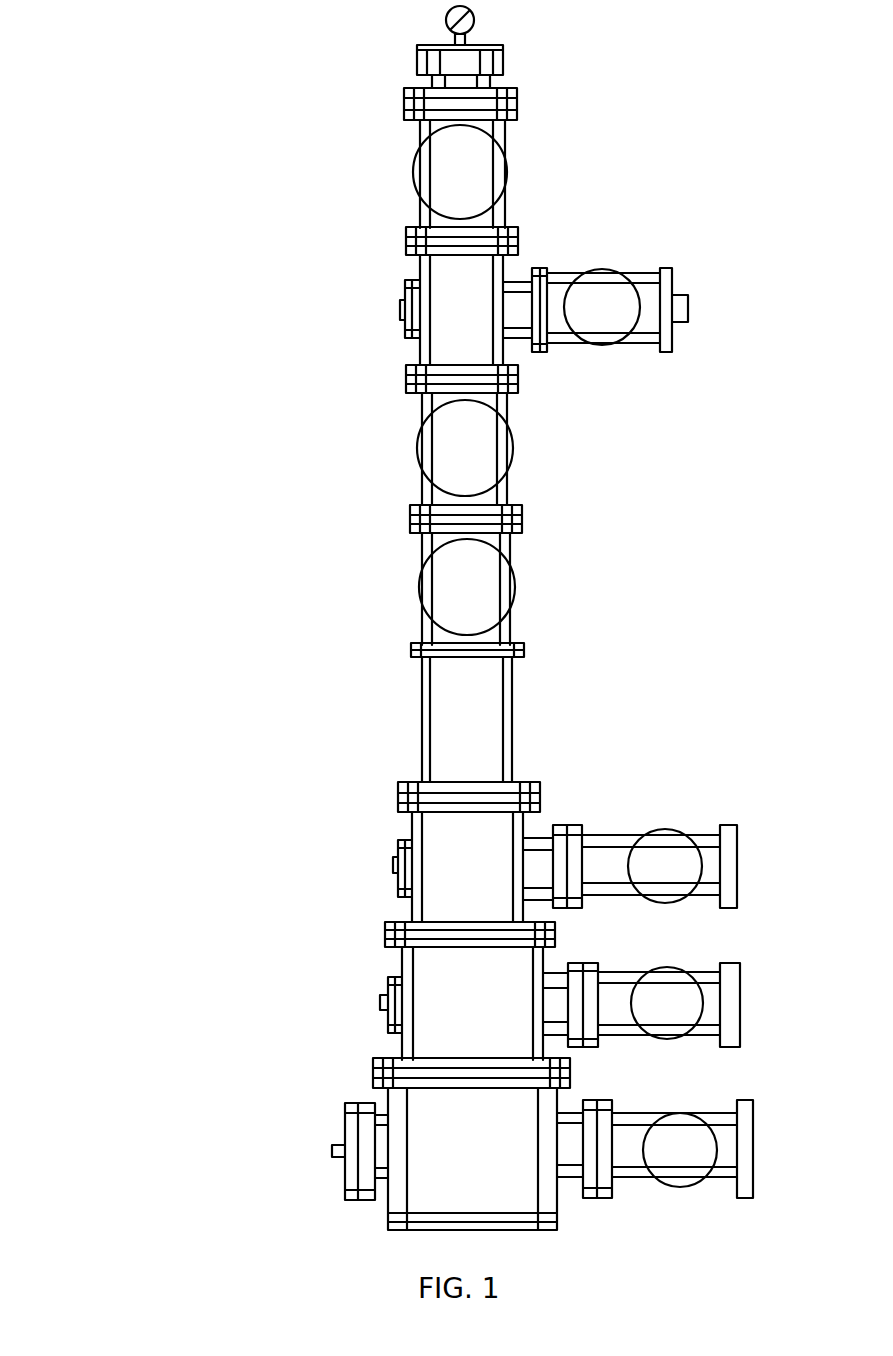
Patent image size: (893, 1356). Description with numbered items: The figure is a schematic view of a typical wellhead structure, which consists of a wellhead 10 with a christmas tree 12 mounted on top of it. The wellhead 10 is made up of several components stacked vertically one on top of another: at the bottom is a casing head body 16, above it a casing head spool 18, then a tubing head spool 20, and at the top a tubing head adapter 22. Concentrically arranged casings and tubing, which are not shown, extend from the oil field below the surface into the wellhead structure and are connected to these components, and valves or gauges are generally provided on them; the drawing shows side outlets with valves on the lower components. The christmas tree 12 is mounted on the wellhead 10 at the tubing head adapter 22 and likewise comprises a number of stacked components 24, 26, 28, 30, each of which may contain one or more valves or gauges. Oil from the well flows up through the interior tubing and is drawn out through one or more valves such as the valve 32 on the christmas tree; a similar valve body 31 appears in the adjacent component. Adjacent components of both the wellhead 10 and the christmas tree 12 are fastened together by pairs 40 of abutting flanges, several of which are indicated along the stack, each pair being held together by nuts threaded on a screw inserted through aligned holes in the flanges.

The wellhead 10 is at (140, 657).
The christmas tree 12 is at (137, 27).
The casing head body 16 is at (423, 1102).
The casing head spool 18 is at (435, 963).
The tubing head spool 20 is at (455, 830).
The tubing head adapter 22 is at (455, 690).
The christmas tree component 24 is at (445, 542).
The christmas tree component 26 is at (440, 403).
The christmas tree component 28 is at (445, 270).
The christmas tree component 30 is at (430, 132).
The valve body 31 is at (495, 458).
The valve 32 is at (500, 592).
The pair of abutting flanges 40 is at (538, 505).